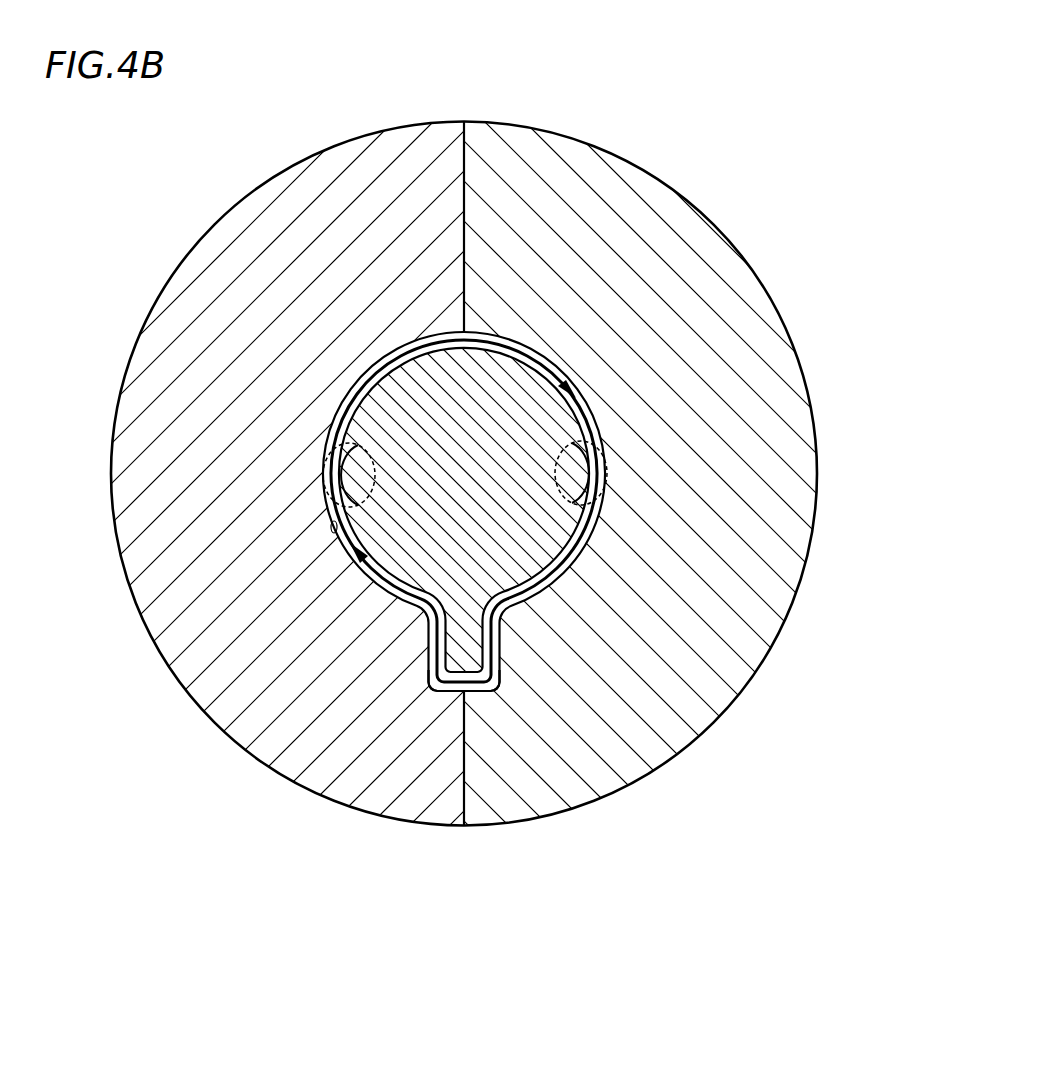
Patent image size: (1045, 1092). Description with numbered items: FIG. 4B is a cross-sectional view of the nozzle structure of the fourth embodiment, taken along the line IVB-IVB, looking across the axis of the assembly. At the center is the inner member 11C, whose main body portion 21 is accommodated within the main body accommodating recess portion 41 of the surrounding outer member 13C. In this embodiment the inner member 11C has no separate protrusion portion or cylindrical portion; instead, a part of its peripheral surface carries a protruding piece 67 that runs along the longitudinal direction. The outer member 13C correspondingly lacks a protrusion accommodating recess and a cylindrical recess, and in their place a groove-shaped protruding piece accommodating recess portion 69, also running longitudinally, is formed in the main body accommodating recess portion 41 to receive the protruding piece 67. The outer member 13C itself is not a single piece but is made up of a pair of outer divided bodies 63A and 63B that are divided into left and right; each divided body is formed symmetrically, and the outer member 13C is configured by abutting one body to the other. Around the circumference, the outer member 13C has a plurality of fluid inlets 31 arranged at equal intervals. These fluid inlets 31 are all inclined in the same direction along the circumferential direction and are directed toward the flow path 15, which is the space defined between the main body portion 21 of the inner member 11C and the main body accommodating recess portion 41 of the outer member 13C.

The outer member 13C is at (745, 235).
The outer divided body 63A is at (240, 198).
The outer divided body 63B is at (680, 190).
The flow path 15 is at (590, 522).
The main body portion 21 is at (377, 433).
The inner member 11C is at (546, 549).
The fluid inlets 31 is at (340, 452).
The main body accommodating recess portion 41 is at (338, 548).
The protruding piece 67 is at (427, 690).
The protruding piece accommodating recess portion 69 is at (490, 690).